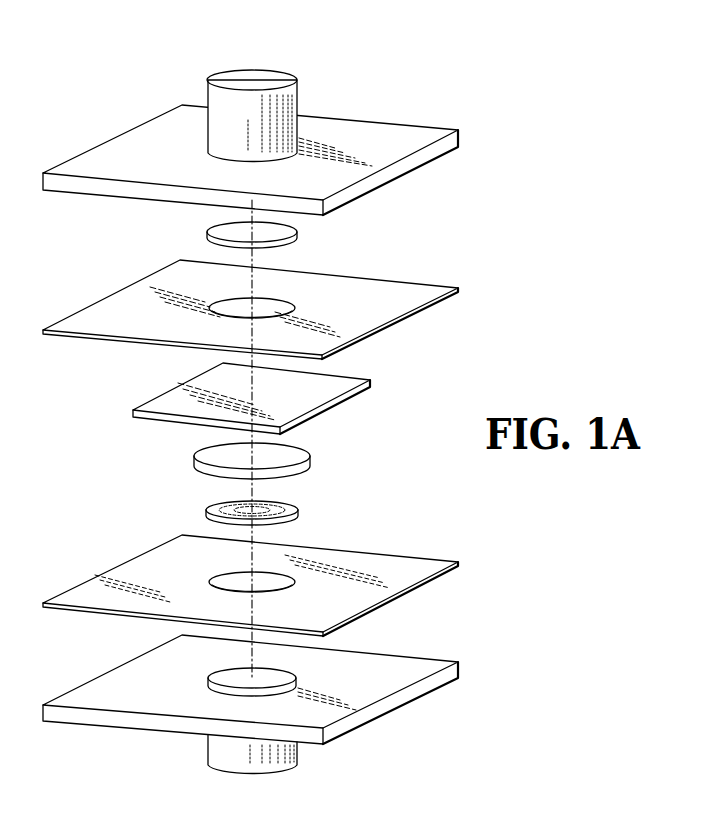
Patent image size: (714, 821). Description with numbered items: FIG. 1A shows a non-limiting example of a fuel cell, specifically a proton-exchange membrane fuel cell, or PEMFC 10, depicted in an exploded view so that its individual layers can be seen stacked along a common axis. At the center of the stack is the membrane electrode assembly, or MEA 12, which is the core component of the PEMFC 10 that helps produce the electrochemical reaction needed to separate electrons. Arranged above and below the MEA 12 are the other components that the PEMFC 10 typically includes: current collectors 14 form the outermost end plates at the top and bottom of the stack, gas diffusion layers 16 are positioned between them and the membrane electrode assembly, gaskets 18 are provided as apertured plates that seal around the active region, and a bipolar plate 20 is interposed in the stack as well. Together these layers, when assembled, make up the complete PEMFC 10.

The PEMFC 10 is at (436, 60).
The membrane electrode assembly 12 is at (143, 404).
The current collectors 14 is at (208, 99).
The gas diffusion layers 16 is at (207, 239).
The gaskets 18 is at (82, 311).
The bipolar plates 20 is at (204, 516).